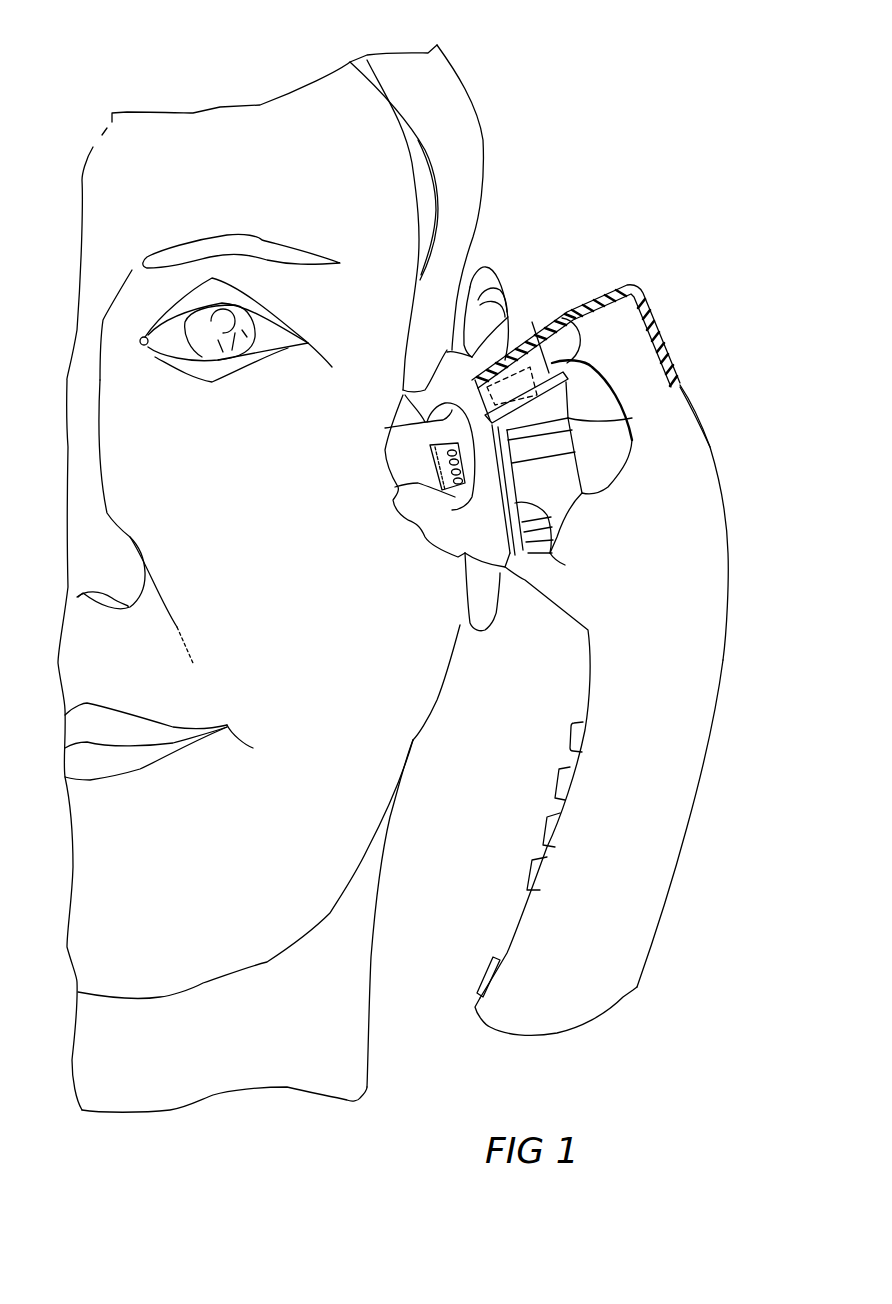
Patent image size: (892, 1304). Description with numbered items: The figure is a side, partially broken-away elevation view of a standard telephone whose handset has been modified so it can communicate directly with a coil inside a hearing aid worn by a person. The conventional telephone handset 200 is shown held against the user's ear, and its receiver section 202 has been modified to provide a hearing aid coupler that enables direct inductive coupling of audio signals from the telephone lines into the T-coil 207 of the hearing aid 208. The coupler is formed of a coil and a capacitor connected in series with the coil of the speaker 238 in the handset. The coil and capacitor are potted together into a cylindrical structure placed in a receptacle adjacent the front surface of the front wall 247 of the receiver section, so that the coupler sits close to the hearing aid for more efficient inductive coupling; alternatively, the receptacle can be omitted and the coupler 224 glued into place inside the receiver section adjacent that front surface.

The telephone handset 200 is at (580, 603).
The receiver section 202 is at (625, 350).
The T-coil 207 is at (423, 449).
The hearing aid 208 is at (379, 480).
The coupler 224 is at (565, 312).
The speaker 238 is at (610, 487).
The front wall 247 is at (553, 547).